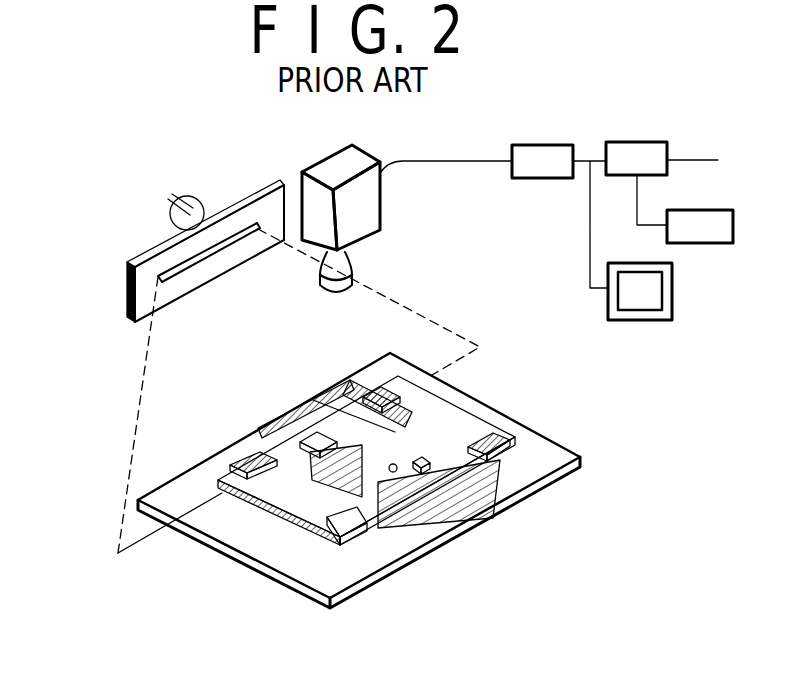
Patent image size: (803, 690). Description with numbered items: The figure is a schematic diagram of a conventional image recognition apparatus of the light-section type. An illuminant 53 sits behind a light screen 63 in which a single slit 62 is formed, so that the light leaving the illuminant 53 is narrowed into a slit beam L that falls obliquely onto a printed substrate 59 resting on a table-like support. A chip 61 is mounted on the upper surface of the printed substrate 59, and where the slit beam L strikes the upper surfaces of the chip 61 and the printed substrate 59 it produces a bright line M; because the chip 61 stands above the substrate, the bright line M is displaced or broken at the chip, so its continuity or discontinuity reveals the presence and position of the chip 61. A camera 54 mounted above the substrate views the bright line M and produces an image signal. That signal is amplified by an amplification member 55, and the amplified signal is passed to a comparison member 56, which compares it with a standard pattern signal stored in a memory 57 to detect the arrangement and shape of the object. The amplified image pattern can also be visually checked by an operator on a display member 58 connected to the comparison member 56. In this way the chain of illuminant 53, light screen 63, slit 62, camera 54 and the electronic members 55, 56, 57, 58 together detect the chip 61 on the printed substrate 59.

The illuminant 53 is at (168, 227).
The camera 54 is at (383, 217).
The amplification member 55 is at (532, 145).
The comparison member 56 is at (628, 142).
The memory 57 is at (713, 210).
The display member 58 is at (672, 300).
The printed substrate 59 is at (442, 522).
The chip 61 is at (510, 455).
The slit 62 is at (219, 248).
The light screen 63 is at (125, 302).
The slit beam L is at (138, 412).
The bright line M is at (206, 490).